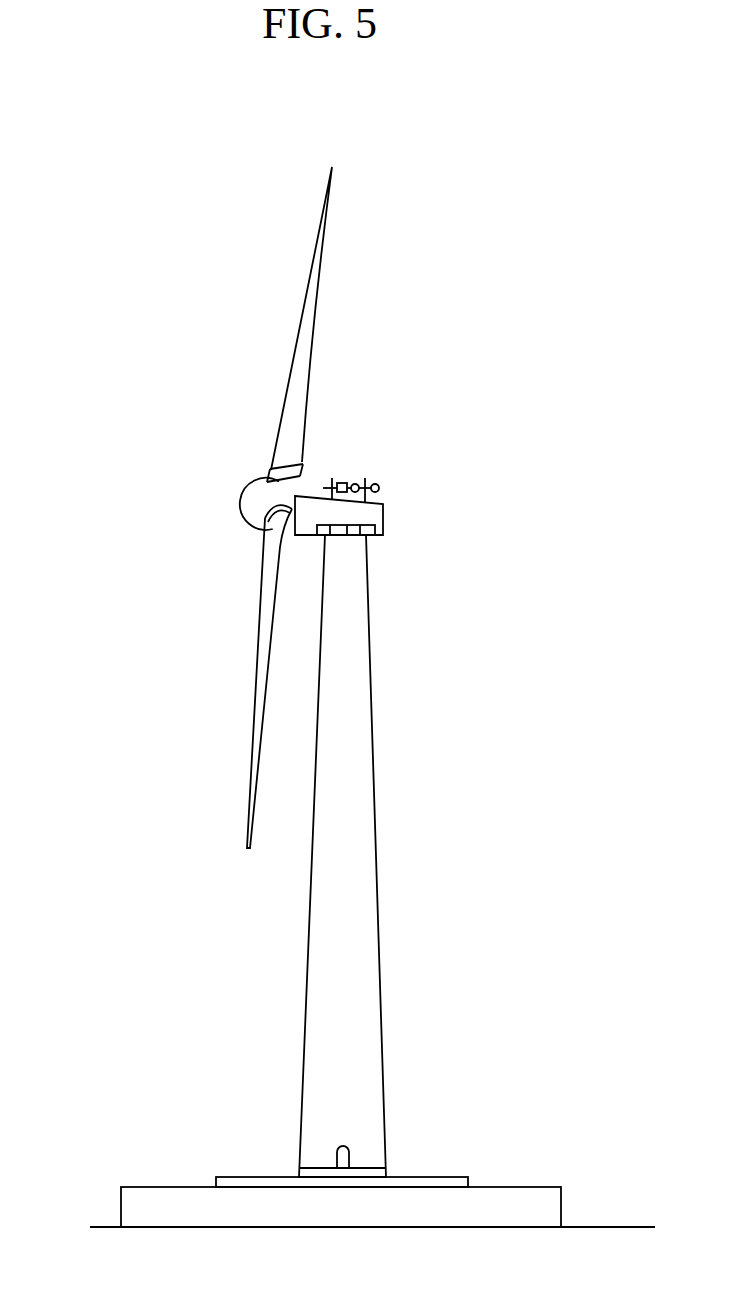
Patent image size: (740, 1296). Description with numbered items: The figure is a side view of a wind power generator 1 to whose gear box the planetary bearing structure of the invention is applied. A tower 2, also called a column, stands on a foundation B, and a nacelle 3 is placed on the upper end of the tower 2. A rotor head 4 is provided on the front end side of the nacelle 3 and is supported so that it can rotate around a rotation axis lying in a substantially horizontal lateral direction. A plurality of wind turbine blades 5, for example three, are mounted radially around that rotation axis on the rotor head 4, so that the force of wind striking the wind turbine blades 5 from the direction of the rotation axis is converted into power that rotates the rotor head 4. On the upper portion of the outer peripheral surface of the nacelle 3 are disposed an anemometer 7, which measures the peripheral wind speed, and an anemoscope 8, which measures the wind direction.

The wind power generator 1 is at (473, 428).
The tower 2 is at (373, 717).
The nacelle 3 is at (370, 448).
The rotor head 4 is at (242, 500).
The wind turbine blades 5 is at (320, 266).
The anemometer 7 is at (379, 488).
The anemoscope 8 is at (336, 477).
The foundation B is at (523, 1187).